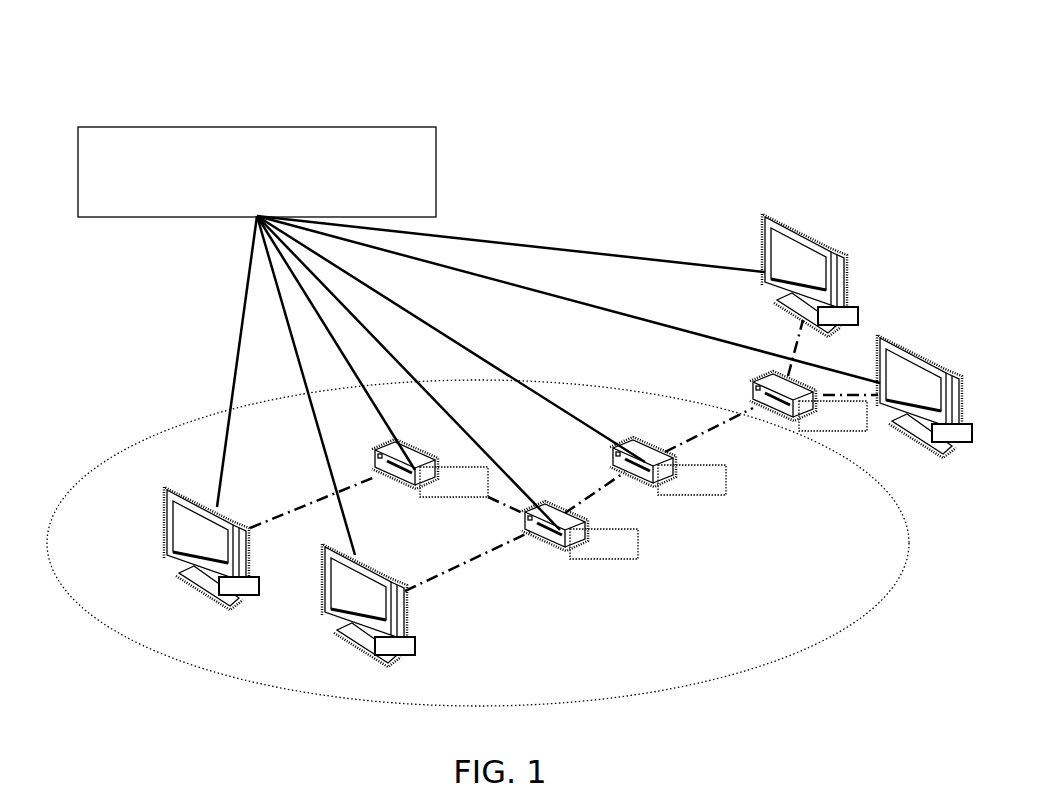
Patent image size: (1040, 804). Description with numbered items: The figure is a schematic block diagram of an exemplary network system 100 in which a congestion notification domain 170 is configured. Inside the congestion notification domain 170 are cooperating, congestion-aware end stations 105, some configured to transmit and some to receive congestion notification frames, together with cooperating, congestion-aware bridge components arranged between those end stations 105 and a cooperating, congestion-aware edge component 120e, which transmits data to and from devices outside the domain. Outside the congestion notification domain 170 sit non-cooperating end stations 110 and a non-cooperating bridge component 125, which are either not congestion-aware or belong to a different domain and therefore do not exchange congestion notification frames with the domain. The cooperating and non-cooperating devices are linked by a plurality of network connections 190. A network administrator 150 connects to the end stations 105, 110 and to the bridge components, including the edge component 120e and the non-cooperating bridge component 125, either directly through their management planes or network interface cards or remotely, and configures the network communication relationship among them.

The network system 100 is at (897, 84).
The cooperating, congestion-aware end station 105 is at (234, 560).
The non-cooperating end station 110 is at (894, 337).
The cooperating, congestion-aware edge component 120e is at (701, 456).
The non-cooperating bridge component 125 is at (805, 407).
The network administrator 150 is at (437, 172).
The congestion notification domain (CND) 170 is at (776, 661).
The network connection 190 is at (257, 525).